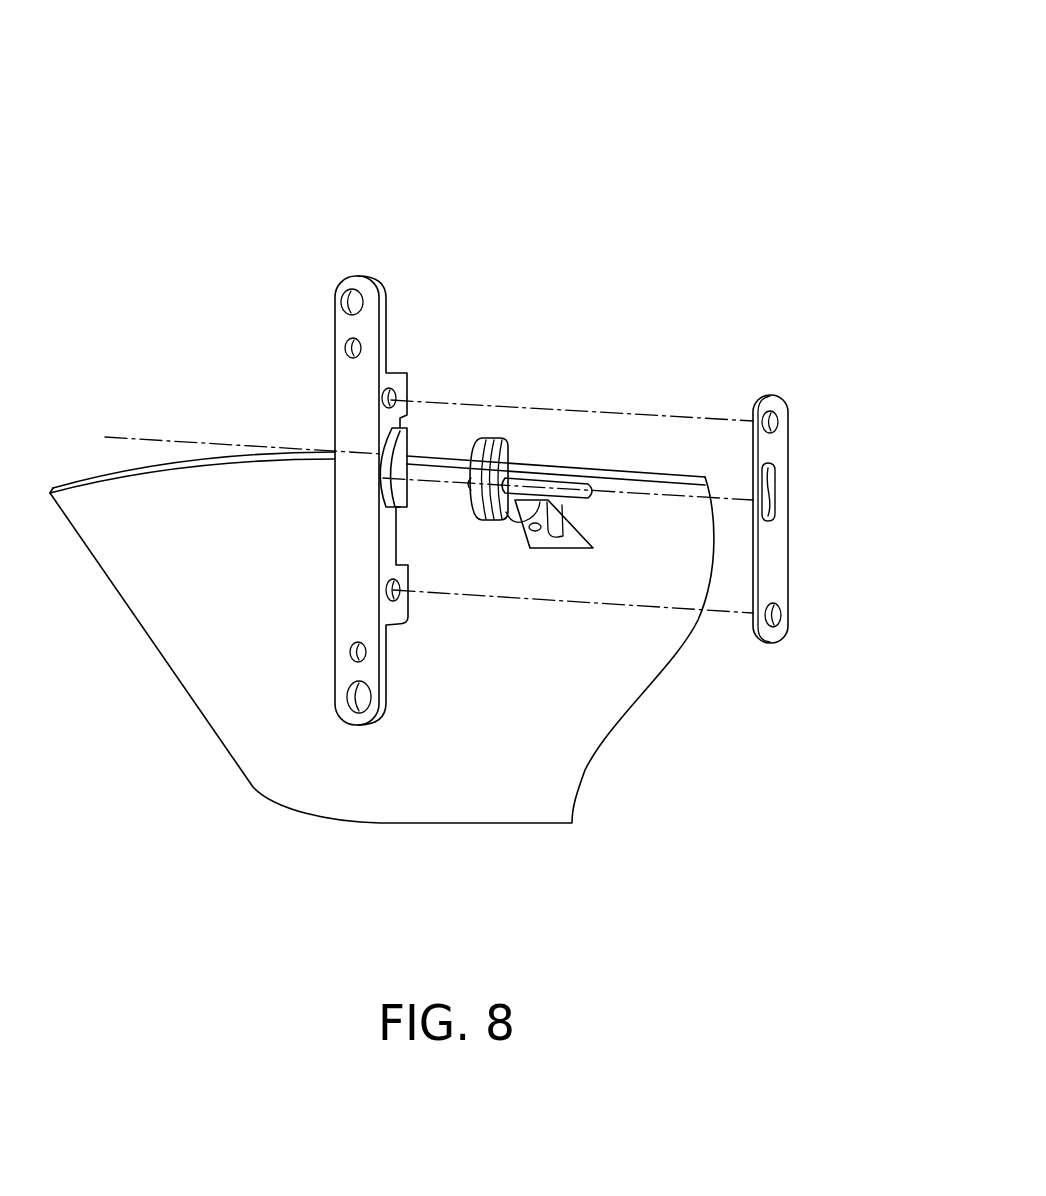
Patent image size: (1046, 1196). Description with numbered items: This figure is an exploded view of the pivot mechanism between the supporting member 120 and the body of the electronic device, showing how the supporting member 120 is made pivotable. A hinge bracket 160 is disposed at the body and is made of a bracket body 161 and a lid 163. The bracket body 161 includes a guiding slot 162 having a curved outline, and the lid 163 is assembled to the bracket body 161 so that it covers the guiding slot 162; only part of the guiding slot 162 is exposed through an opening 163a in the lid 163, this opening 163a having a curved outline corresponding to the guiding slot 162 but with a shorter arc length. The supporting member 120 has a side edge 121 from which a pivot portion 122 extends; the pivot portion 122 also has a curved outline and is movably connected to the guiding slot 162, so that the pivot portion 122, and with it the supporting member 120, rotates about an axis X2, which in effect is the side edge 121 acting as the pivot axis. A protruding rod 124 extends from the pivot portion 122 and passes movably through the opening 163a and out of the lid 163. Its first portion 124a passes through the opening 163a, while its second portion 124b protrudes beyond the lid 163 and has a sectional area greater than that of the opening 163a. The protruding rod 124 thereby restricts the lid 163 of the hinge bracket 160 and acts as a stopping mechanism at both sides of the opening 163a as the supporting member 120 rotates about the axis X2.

The supporting member 120 is at (487, 793).
The side edge 121 is at (661, 460).
The pivot portion 122 is at (474, 446).
The protruding rod 124 is at (608, 343).
The first portion 124a is at (515, 445).
The second portion 124b is at (565, 480).
The hinge bracket 160 is at (766, 23).
The bracket body 161 is at (340, 380).
The guiding slot 162 is at (403, 441).
The lid 163 is at (818, 519).
The opening 163a is at (778, 481).
The axis X2 is at (165, 440).